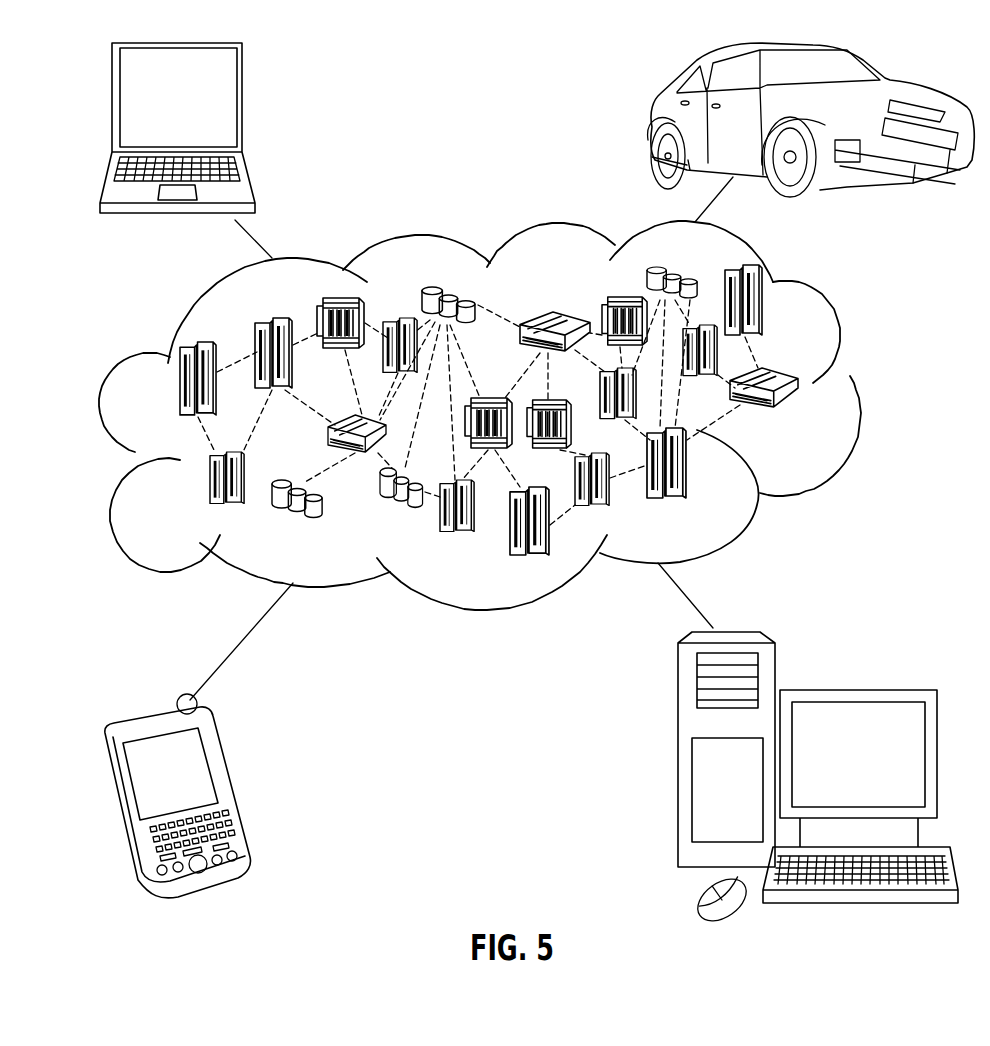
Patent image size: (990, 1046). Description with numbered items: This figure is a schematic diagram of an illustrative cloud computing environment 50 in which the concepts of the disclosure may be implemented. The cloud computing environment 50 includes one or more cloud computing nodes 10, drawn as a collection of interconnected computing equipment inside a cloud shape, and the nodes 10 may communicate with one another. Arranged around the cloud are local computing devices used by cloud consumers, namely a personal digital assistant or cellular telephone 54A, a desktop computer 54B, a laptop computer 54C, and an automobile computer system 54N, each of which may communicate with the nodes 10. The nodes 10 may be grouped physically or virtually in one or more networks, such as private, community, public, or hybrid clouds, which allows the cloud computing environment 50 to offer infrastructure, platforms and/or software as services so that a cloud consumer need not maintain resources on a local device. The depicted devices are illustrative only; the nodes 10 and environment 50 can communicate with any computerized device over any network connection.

The cloud computing nodes 10 is at (812, 429).
The cloud computing environment 50 is at (858, 390).
The personal digital assistant (PDA) or cellular telephone 54A is at (237, 786).
The desktop computer 54B is at (858, 688).
The laptop computer 54C is at (247, 104).
The automobile computer system 54N is at (652, 120).